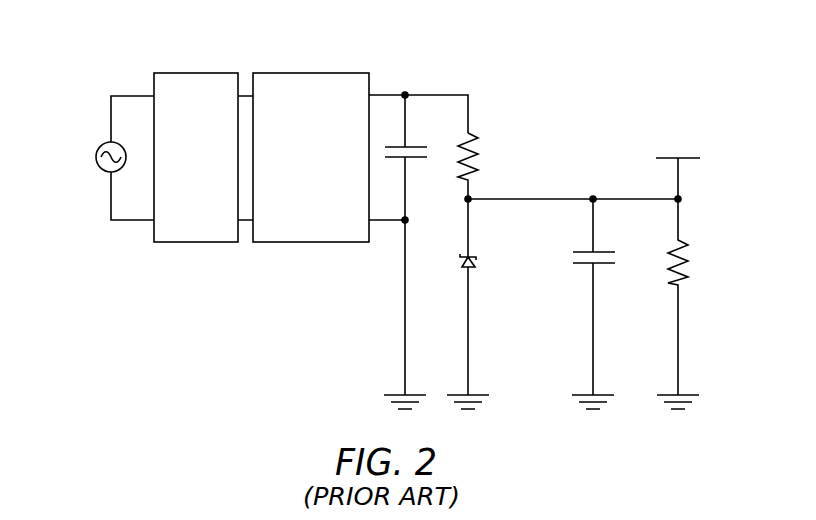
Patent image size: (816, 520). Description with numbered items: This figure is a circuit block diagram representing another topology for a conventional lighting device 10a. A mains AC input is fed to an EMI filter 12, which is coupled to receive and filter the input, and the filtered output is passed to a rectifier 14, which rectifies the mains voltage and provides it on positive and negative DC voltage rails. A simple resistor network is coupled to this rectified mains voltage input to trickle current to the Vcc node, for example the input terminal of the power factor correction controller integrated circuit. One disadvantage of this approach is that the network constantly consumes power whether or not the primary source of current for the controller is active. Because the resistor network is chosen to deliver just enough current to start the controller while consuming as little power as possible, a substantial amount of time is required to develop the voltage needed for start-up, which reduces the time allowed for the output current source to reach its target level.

The prior art power supply circuit 10a is at (199, 341).
The EMI filter 12 is at (195, 72).
The rectifier 14 is at (311, 72).